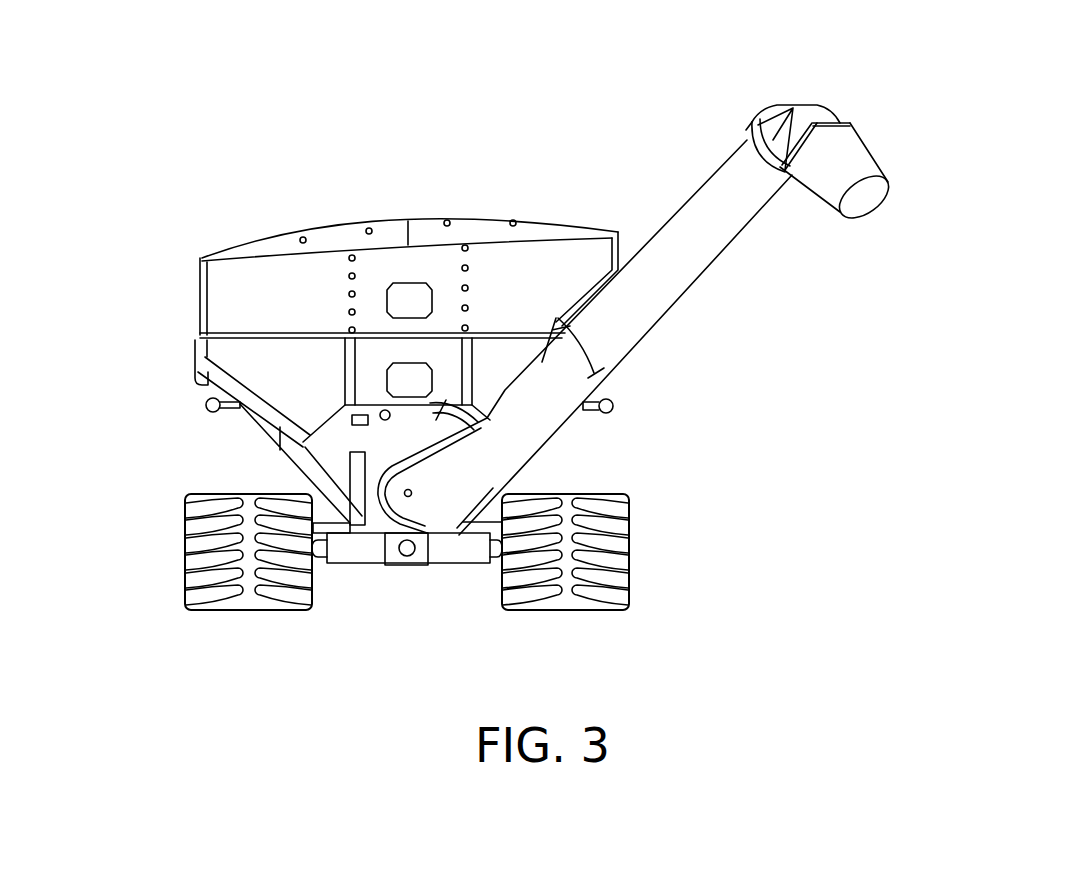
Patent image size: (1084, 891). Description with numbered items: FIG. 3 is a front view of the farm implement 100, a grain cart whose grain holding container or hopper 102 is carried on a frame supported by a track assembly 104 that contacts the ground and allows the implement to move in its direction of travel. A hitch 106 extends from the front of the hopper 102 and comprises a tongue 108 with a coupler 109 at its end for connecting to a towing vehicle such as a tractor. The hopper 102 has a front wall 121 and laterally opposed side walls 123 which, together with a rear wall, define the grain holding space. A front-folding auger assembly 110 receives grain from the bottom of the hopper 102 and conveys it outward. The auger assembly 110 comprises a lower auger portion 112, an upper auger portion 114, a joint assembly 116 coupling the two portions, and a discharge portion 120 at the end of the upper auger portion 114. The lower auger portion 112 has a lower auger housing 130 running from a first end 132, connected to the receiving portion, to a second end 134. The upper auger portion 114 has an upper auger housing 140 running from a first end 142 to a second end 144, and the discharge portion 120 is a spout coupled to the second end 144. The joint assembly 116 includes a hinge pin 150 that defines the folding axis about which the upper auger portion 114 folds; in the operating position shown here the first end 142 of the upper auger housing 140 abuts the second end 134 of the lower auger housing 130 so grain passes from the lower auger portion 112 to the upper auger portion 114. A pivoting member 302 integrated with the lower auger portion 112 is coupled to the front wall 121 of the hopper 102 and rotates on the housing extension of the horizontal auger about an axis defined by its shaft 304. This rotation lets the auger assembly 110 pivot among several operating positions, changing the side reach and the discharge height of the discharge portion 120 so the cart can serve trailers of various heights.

The farm implement 100 is at (450, 104).
The hopper 102 is at (193, 250).
The track assembly 104 is at (180, 542).
The hitch 106 is at (380, 578).
The tongue 108 is at (351, 567).
The coupler 109 is at (411, 556).
The auger assembly 110 is at (816, 381).
The lower auger portion 112 is at (568, 432).
The upper auger portion 114 is at (660, 212).
The joint assembly 116 is at (548, 319).
The discharge portion 120 is at (838, 122).
The front wall 121 is at (237, 272).
The side walls 123 is at (198, 316).
The lower auger housing 130 is at (563, 412).
The first end 132 is at (505, 483).
The second end 134 is at (596, 372).
The upper auger housing 140 is at (718, 233).
The first end 142 is at (642, 337).
The second end 144 is at (745, 150).
The hinge pin 150 is at (562, 322).
The pivoting member 302 is at (366, 473).
The shaft 304 is at (413, 494).